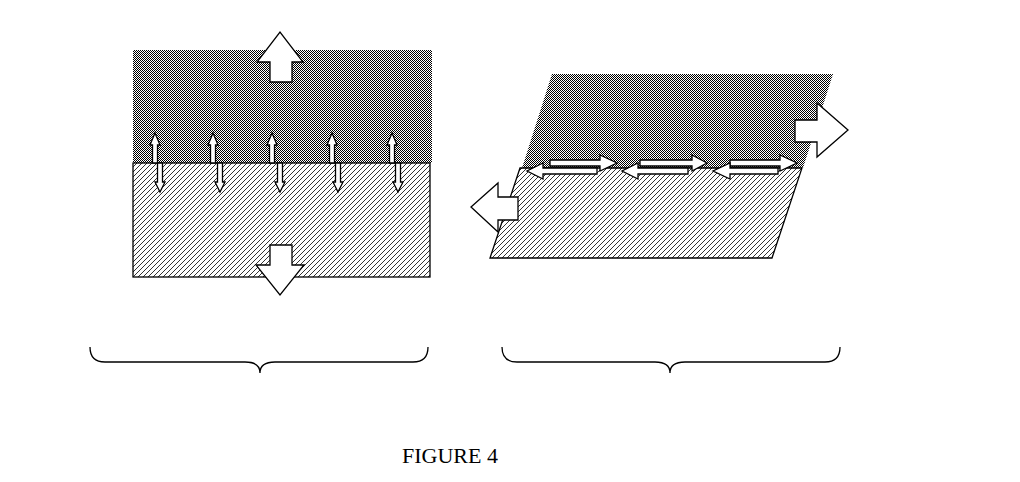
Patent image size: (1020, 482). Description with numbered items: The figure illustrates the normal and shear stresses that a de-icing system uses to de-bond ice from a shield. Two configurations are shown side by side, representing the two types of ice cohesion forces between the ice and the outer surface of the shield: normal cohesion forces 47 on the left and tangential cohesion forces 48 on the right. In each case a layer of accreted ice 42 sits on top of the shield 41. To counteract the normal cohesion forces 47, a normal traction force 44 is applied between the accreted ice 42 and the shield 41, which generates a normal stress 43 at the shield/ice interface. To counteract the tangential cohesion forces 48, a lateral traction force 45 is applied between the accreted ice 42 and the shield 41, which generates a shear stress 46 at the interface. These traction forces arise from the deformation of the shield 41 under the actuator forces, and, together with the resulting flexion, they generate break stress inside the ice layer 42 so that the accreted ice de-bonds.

The shield 41 is at (352, 223).
The accreted ice 42 is at (377, 102).
The normal stress 43 is at (148, 150).
The normal traction force 44 is at (278, 57).
The lateral traction force 45 is at (828, 128).
The shear stress 46 is at (753, 167).
The normal cohesion forces 47 is at (259, 374).
The tangential cohesion forces 48 is at (671, 374).